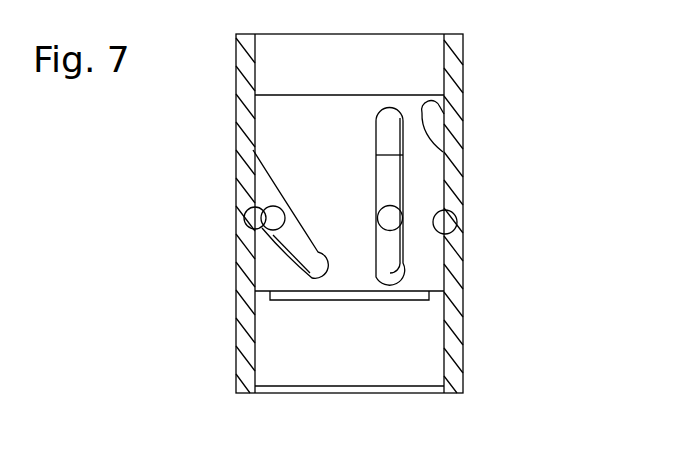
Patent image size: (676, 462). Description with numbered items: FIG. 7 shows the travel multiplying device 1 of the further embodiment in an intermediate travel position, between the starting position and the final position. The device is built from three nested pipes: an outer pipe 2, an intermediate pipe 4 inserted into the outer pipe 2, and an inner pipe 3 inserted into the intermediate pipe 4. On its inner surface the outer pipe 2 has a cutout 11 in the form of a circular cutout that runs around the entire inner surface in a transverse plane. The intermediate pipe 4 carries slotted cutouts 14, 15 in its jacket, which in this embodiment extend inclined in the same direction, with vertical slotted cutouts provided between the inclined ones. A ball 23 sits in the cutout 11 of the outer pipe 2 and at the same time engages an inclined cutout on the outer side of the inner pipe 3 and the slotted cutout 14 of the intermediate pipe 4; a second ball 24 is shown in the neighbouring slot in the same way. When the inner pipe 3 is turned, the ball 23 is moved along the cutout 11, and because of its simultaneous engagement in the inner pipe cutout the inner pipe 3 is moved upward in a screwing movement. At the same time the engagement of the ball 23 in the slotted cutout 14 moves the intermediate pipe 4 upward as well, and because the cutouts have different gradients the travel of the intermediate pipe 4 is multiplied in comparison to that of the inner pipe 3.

The travel multiplying device 1 is at (510, 53).
The outer pipe 2 is at (453, 306).
The inner pipe 3 is at (397, 300).
The intermediate pipe 4 is at (280, 133).
The cutout 11 is at (447, 225).
The slotted cutout 14 is at (267, 195).
The slotted cutout 15 is at (432, 133).
The ball 23 is at (275, 220).
The pin 24 is at (392, 219).